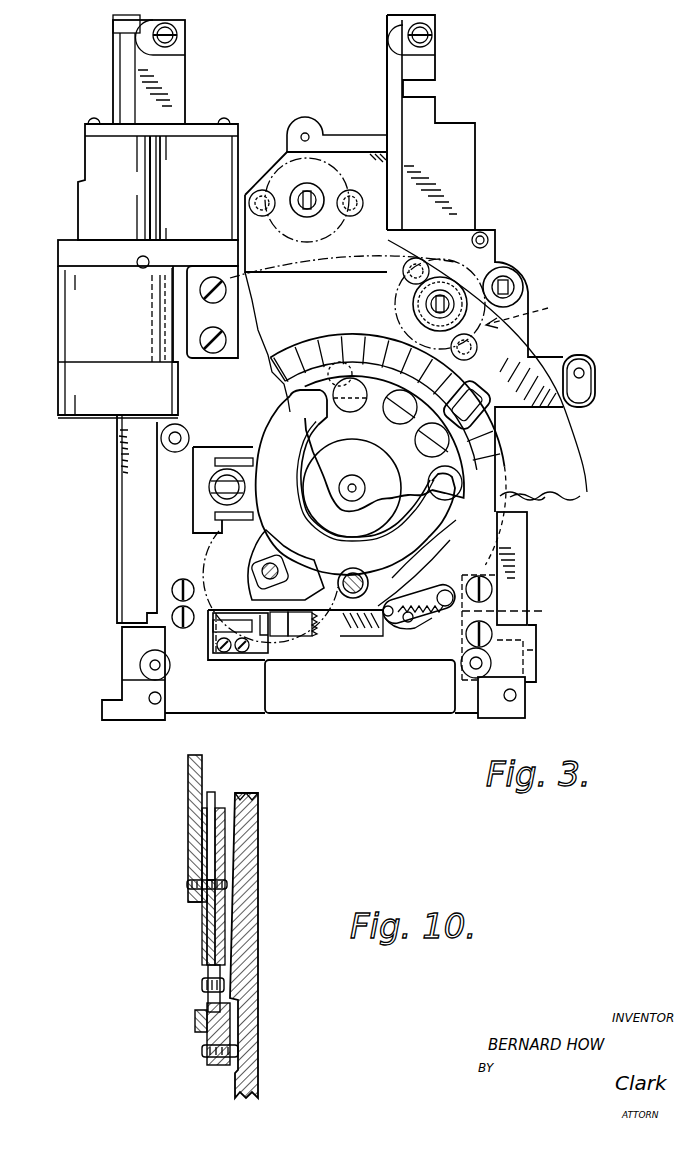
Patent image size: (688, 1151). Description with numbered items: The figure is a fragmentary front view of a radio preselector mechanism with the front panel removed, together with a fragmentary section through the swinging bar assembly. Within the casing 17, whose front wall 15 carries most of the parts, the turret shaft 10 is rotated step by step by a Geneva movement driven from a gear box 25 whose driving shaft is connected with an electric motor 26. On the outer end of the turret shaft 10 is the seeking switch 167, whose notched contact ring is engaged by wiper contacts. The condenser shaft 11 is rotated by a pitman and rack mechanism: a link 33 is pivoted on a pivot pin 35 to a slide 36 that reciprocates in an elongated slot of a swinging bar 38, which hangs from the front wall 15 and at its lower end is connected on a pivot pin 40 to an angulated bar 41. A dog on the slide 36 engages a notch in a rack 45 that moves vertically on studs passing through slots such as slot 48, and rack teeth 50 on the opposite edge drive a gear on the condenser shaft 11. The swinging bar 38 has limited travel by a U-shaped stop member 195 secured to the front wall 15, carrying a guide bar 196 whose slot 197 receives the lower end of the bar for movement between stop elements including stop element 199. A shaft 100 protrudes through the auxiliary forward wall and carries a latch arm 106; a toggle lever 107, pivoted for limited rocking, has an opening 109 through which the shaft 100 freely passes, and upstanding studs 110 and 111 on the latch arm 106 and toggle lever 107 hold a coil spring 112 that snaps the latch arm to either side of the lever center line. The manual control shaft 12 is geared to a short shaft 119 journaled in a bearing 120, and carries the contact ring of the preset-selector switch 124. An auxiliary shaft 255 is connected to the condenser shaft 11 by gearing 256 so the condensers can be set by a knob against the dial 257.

In FIG. 3, the gear box 25 is at (100, 158).
In FIG. 3, the electric motor 26 is at (72, 307).
In FIG. 3, the turret shaft 10 is at (305, 196).
In FIG. 3, the seeking switch 167 is at (330, 160).
In FIG. 3, the casing 17 is at (462, 152).
In FIG. 3, the short shaft 119 is at (470, 315).
In FIG. 3, the bearing 120 is at (523, 283).
In FIG. 3, the preset-selector switch 124 is at (544, 311).
In FIG. 3, the manual control shaft 12 is at (434, 303).
In FIG. 3, the condenser shaft 11 is at (354, 485).
In FIG. 3, the dial 257 is at (548, 440).
In FIG. 3, the gearing 256 is at (200, 563).
In FIG. 3, the stop element 199 is at (268, 580).
In FIG. 3, the guide bar 196 is at (215, 627).
In FIG. 10, the guide bar 196 is at (198, 1028).
In FIG. 3, the U-shaped stop member 195 is at (232, 655).
In FIG. 10, the U-shaped stop member 195 is at (210, 1058).
In FIG. 3, the rack 45 is at (278, 637).
In FIG. 3, the slot 48 is at (298, 637).
In FIG. 3, the rack teeth 50 is at (320, 640).
In FIG. 3, the auxiliary shaft 255 is at (357, 598).
In FIG. 3, the shaft 100 is at (407, 623).
In FIG. 3, the latch arm 106 is at (422, 622).
In FIG. 3, the toggle lever 107 is at (420, 605).
In FIG. 3, the stud 110 is at (430, 552).
In FIG. 3, the stud 111 is at (497, 600).
In FIG. 3, the coil spring 112 is at (395, 605).
In FIG. 3, the opening 109 is at (528, 608).
In FIG. 10, the link 33 is at (188, 845).
In FIG. 10, the swinging bar 38 is at (213, 798).
In FIG. 10, the slide 36 is at (228, 860).
In FIG. 10, the pivot pin 35 is at (187, 888).
In FIG. 10, the angulated bar 41 is at (204, 972).
In FIG. 10, the pivot pin 40 is at (202, 986).
In FIG. 10, the front wall 15 is at (258, 935).
In FIG. 10, the slot 197 is at (215, 1025).